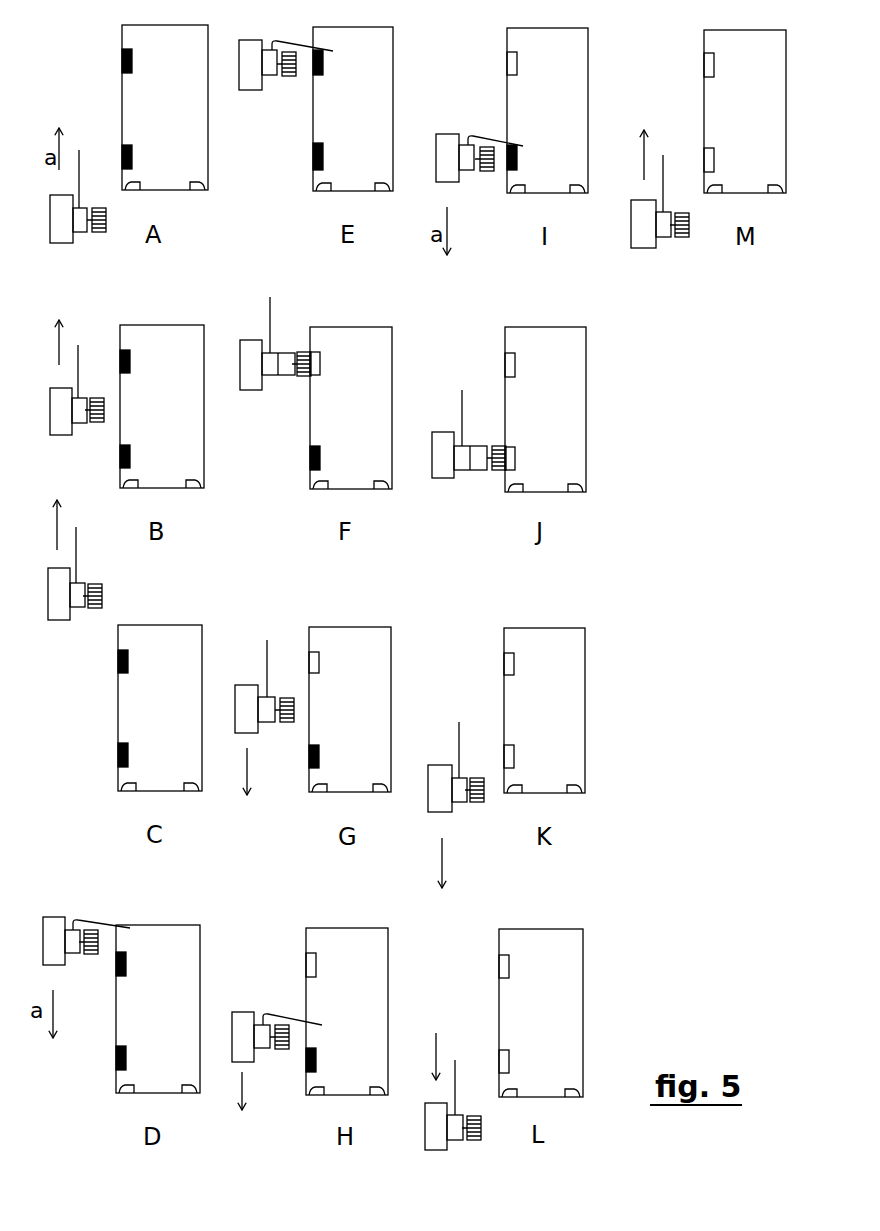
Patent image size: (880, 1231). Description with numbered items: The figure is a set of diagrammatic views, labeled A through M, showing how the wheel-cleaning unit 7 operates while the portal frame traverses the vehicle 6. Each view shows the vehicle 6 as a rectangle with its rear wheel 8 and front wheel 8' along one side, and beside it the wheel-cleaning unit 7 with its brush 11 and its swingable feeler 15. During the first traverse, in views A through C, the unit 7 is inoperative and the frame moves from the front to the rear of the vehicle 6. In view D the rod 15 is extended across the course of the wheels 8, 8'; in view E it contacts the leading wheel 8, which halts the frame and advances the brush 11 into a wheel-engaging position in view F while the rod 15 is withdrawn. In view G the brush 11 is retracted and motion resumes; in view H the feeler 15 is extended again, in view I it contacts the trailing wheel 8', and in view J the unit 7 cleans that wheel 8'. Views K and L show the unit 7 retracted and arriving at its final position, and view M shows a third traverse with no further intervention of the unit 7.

The vehicle 6 is at (205, 42).
The wheel-cleaning unit 7 is at (80, 242).
The rear wheel 8 is at (398, 505).
The front wheel 8' is at (399, 617).
The brush 11 is at (98, 232).
The feeler 15 is at (79, 150).